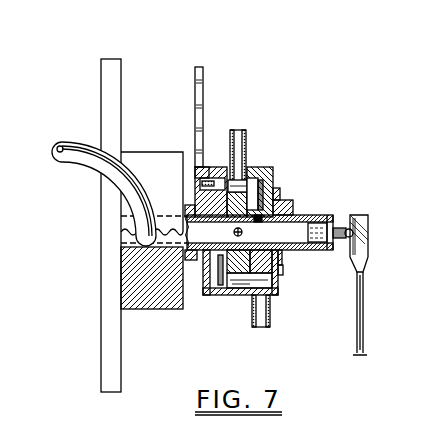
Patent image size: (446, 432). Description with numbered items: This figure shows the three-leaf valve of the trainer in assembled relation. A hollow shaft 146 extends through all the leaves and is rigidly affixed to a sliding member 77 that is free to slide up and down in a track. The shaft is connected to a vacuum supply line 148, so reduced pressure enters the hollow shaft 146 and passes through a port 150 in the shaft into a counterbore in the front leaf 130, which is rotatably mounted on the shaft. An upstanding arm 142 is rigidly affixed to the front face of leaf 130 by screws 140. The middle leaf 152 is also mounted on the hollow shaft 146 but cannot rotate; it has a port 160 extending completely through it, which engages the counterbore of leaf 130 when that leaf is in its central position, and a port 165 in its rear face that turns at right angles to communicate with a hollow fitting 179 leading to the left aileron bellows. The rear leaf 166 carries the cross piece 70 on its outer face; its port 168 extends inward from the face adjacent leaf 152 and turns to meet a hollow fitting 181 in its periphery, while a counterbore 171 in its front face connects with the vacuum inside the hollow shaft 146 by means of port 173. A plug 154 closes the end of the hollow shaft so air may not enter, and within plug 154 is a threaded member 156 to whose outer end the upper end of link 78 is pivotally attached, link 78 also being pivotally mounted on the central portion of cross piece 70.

The cross piece 70 is at (287, 202).
The sliding member 77 is at (148, 162).
The link 78 is at (363, 292).
The leaf 130 is at (218, 167).
The screws 140 is at (207, 167).
The upstanding arm 142 is at (195, 73).
The hollow shaft 146 is at (321, 250).
The vacuum supply line 148 is at (83, 157).
The port 150 is at (203, 293).
The middle leaf 152 is at (233, 296).
The plug 154 is at (331, 220).
The threaded member 156 is at (367, 220).
The port 160 is at (243, 283).
The port 165 is at (252, 178).
The leaf 166 is at (273, 172).
The port 168 is at (276, 292).
The counterbore 171 is at (281, 192).
The port 173 is at (258, 227).
The hollow fitting 179 is at (247, 135).
The hollow fitting 181 is at (262, 328).